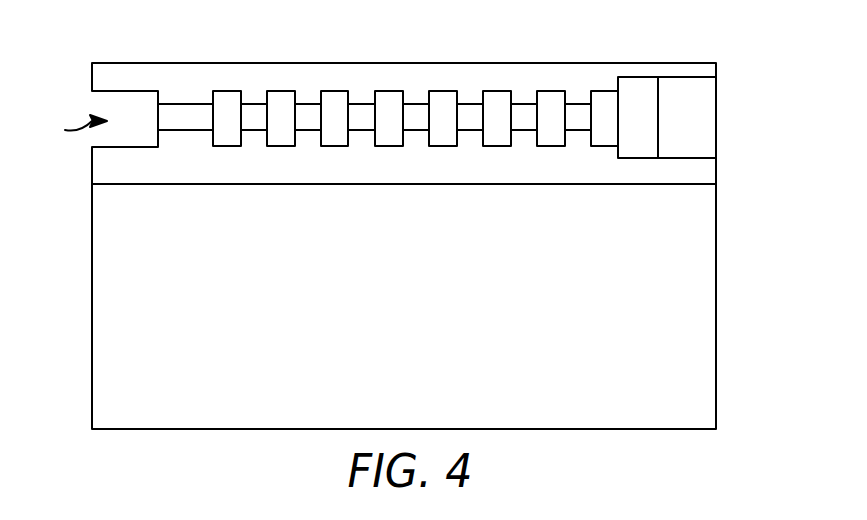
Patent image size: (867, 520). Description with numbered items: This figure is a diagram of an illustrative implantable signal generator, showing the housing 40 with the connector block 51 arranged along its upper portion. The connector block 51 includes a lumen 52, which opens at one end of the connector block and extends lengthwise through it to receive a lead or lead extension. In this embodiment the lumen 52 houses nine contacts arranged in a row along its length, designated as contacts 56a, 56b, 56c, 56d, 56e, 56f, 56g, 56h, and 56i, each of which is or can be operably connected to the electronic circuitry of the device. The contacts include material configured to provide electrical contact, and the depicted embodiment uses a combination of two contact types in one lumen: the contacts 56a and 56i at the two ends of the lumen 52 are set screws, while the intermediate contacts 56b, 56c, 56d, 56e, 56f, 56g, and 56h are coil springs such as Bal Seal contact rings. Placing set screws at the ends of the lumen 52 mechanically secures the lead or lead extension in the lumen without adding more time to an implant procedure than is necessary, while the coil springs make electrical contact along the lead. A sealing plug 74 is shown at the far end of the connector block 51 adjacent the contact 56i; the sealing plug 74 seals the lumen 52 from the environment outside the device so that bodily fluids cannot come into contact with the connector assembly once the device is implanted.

The housing 40 is at (102, 315).
The connector block 51 is at (412, 72).
The lumen 52 is at (72, 131).
The contact 56a is at (186, 125).
The contact 56b is at (254, 125).
The contact 56c is at (308, 125).
The contact 56d is at (362, 125).
The contact 56e is at (416, 125).
The contact 56f is at (470, 125).
The contact 56g is at (524, 125).
The contact 56h is at (578, 125).
The contact 56i is at (637, 82).
The sealing plug 74 is at (705, 115).